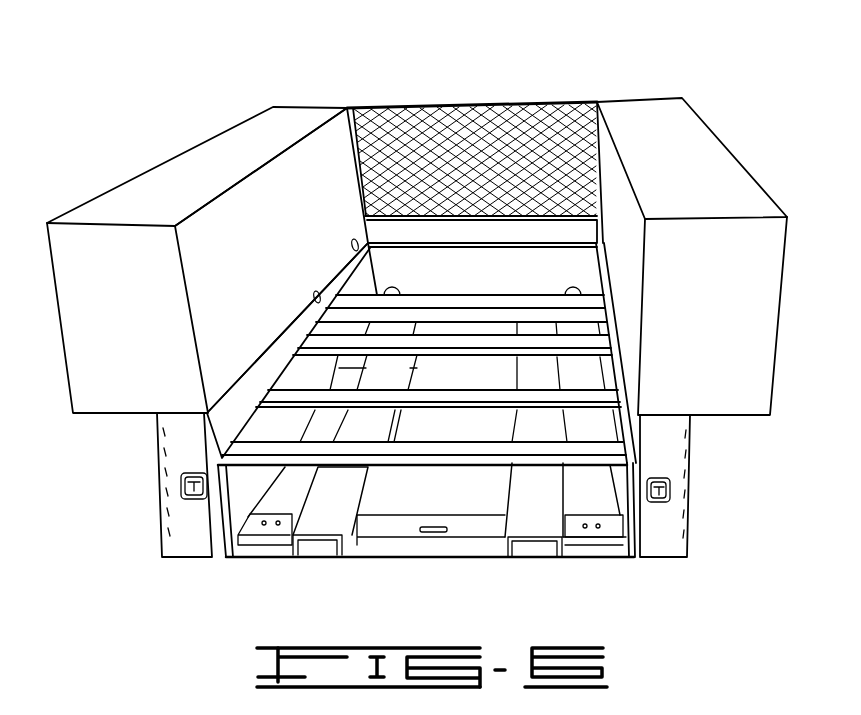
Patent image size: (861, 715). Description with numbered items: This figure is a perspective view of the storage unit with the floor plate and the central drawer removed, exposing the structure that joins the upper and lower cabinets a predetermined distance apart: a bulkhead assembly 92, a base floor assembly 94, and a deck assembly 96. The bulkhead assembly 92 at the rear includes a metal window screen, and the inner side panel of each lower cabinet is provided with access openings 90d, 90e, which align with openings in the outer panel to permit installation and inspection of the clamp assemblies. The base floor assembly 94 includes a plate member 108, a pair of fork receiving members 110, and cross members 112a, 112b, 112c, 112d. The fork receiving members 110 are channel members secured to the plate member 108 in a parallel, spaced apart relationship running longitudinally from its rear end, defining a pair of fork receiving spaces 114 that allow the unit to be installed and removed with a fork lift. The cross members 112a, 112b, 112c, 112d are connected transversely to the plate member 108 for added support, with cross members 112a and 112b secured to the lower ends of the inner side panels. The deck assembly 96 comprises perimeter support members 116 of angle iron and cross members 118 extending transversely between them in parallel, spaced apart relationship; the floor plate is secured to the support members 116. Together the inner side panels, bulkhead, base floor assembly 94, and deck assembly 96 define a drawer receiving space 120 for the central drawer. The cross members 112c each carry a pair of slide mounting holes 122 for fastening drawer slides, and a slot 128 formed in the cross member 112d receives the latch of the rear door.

The bulkhead assembly 92 is at (477, 100).
The access opening 90d is at (357, 238).
The access opening 90e is at (316, 290).
The base floor assembly 94 is at (247, 566).
The deck assembly 96 is at (443, 470).
The plate member 108 is at (583, 558).
The fork receiving member 110 is at (312, 543).
The cross member 112a is at (440, 313).
The cross member 112b is at (460, 357).
The cross member 112c is at (251, 526).
The cross member 112d is at (387, 538).
The fork receiving space 114 is at (335, 546).
The perimeter support member 116 is at (292, 356).
The cross member 118 is at (303, 397).
The drawer receiving space 120 is at (238, 486).
The slide mounting hole 122 is at (276, 526).
The slot 128 is at (437, 533).